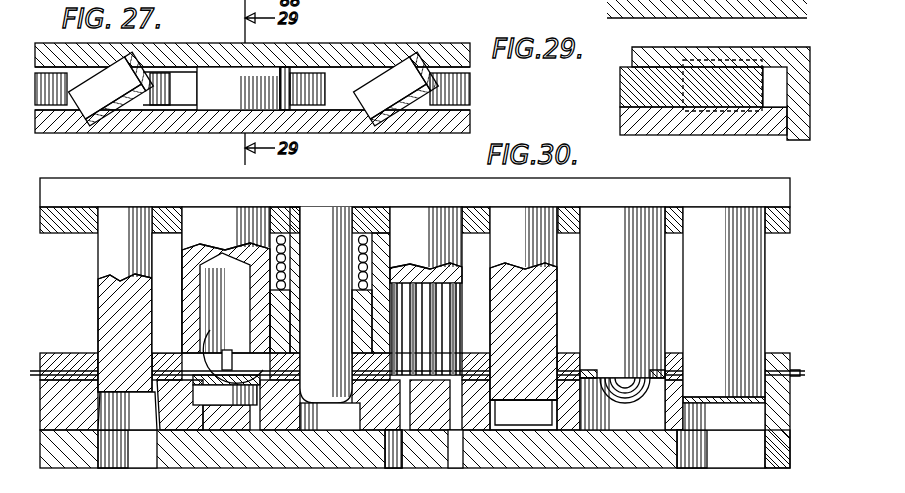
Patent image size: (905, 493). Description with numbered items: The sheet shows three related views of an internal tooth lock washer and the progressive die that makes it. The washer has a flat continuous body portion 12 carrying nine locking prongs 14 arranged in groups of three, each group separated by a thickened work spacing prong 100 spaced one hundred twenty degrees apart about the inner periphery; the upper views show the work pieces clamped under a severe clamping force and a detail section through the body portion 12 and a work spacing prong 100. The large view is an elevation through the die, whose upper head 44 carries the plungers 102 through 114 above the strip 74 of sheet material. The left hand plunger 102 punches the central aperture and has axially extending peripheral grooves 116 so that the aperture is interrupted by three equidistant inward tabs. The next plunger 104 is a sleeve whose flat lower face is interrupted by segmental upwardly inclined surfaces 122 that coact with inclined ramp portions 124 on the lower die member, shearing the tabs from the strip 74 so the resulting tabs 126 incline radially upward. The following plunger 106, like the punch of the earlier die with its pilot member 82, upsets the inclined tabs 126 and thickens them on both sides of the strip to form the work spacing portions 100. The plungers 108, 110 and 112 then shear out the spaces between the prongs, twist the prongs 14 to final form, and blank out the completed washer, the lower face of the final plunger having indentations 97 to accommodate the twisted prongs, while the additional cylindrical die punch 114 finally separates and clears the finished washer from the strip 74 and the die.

In FIG. 29, the body portion 12 is at (620, 88).
In FIG. 30, the body portion 12 is at (758, 403).
In FIG. 27, the locking prongs 14 is at (393, 72).
In FIG. 29, the locking prongs 14 is at (750, 62).
In FIG. 30, the upper head 44 is at (357, 185).
In FIG. 30, the strip 74 is at (414, 461).
In FIG. 30, the pilot member 82 is at (320, 400).
In FIG. 30, the indentations 97 is at (620, 368).
In FIG. 27, the work spacing prongs 100 is at (224, 70).
In FIG. 29, the work spacing prongs 100 is at (690, 80).
In FIG. 30, the left hand plunger 102 is at (113, 222).
In FIG. 30, the die plunger 104 is at (200, 222).
In FIG. 30, the die plunger 106 is at (300, 303).
In FIG. 30, the plunger 108 is at (418, 222).
In FIG. 30, the plunger 110 is at (525, 222).
In FIG. 30, the plunger 112 is at (620, 222).
In FIG. 30, the cylindrical die punch 114 is at (710, 222).
In FIG. 30, the peripheral grooves 116 is at (150, 305).
In FIG. 30, the segmental upwardly inclined surfaces 122 is at (226, 345).
In FIG. 30, the inclined ramp portions 124 is at (233, 356).
In FIG. 30, the tabs 126 is at (195, 368).